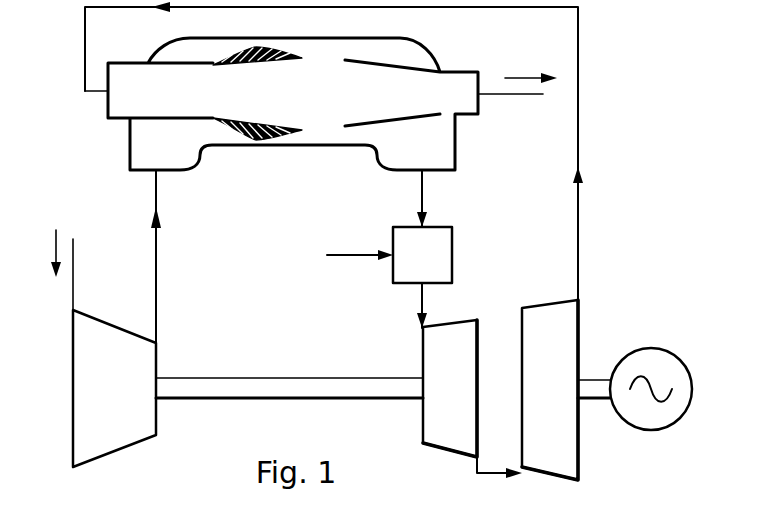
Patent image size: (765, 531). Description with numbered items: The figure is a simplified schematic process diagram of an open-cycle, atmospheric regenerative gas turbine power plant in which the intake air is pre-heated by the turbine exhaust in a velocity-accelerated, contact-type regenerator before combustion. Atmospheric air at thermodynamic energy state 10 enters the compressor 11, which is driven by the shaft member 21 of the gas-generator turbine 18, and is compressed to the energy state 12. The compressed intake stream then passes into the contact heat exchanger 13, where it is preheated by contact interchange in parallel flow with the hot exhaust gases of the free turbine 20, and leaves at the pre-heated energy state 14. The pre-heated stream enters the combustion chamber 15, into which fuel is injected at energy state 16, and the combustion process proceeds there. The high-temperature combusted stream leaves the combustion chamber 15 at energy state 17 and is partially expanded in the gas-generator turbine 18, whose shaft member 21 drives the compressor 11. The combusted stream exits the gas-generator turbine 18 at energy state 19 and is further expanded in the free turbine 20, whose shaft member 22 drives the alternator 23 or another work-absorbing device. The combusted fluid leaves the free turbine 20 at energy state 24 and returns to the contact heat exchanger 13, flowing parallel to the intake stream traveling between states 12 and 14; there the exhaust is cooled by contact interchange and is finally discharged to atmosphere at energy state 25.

The thermodynamic energy state of atmospheric intake air 10 is at (68, 285).
The compressor 11 is at (107, 398).
The thermodynamic energy state of compressed intake air 12 is at (152, 308).
The contact heat exchanger 13 is at (290, 147).
The thermodynamic energy state of pre-heated intake fluid 14 is at (426, 193).
The combustion chamber 15 is at (412, 268).
The thermodynamic energy state of injected fuel 16 is at (352, 258).
The thermodynamic energy state of combusted fluid leaving combustion chamber 17 is at (422, 300).
The gas-generator turbine 18 is at (439, 398).
The thermodynamic energy state between turbines 19 is at (488, 470).
The free turbine 20 is at (540, 398).
The shaft member 21 is at (290, 376).
The shaft member 22 is at (593, 385).
The alternator 23 is at (655, 352).
The thermodynamic energy state of free turbine exhaust 24 is at (92, 73).
The thermodynamic energy state of discharged exhaust 25 is at (510, 87).